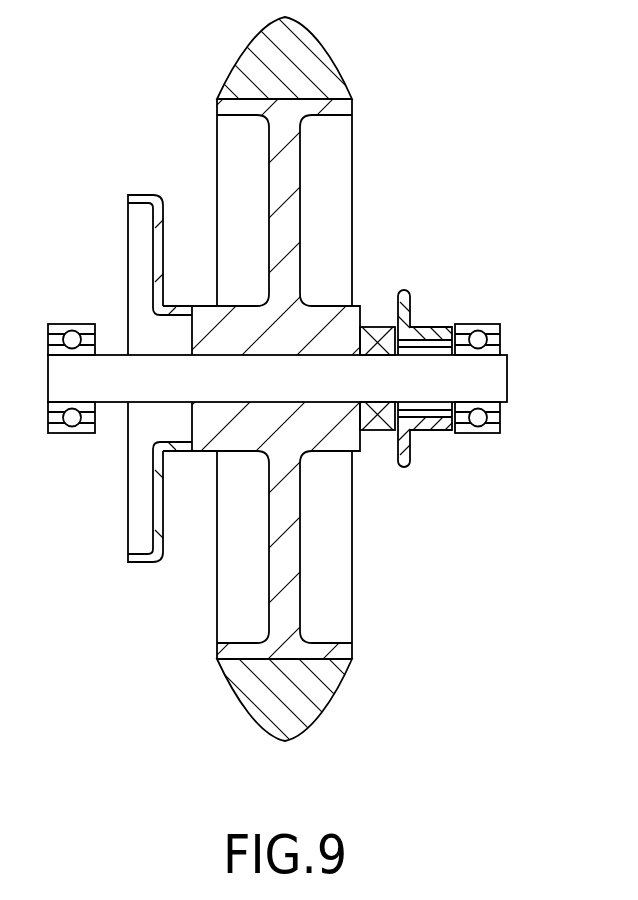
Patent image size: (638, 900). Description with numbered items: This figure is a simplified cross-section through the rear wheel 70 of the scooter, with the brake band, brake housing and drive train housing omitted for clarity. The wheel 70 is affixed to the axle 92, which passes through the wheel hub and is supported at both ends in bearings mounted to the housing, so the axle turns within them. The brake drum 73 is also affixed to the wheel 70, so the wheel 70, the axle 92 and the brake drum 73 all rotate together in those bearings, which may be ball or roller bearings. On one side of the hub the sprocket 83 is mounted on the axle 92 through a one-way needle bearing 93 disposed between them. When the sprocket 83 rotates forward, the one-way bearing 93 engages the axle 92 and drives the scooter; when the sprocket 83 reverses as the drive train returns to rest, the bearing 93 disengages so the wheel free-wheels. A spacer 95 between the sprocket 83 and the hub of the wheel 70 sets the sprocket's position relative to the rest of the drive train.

The rear wheel 70 is at (353, 138).
The brake drum 73 is at (128, 507).
The sprocket 83 is at (422, 323).
The axle 92 is at (510, 378).
The one-way needle bearing 93 is at (440, 338).
The spacer 95 is at (363, 324).